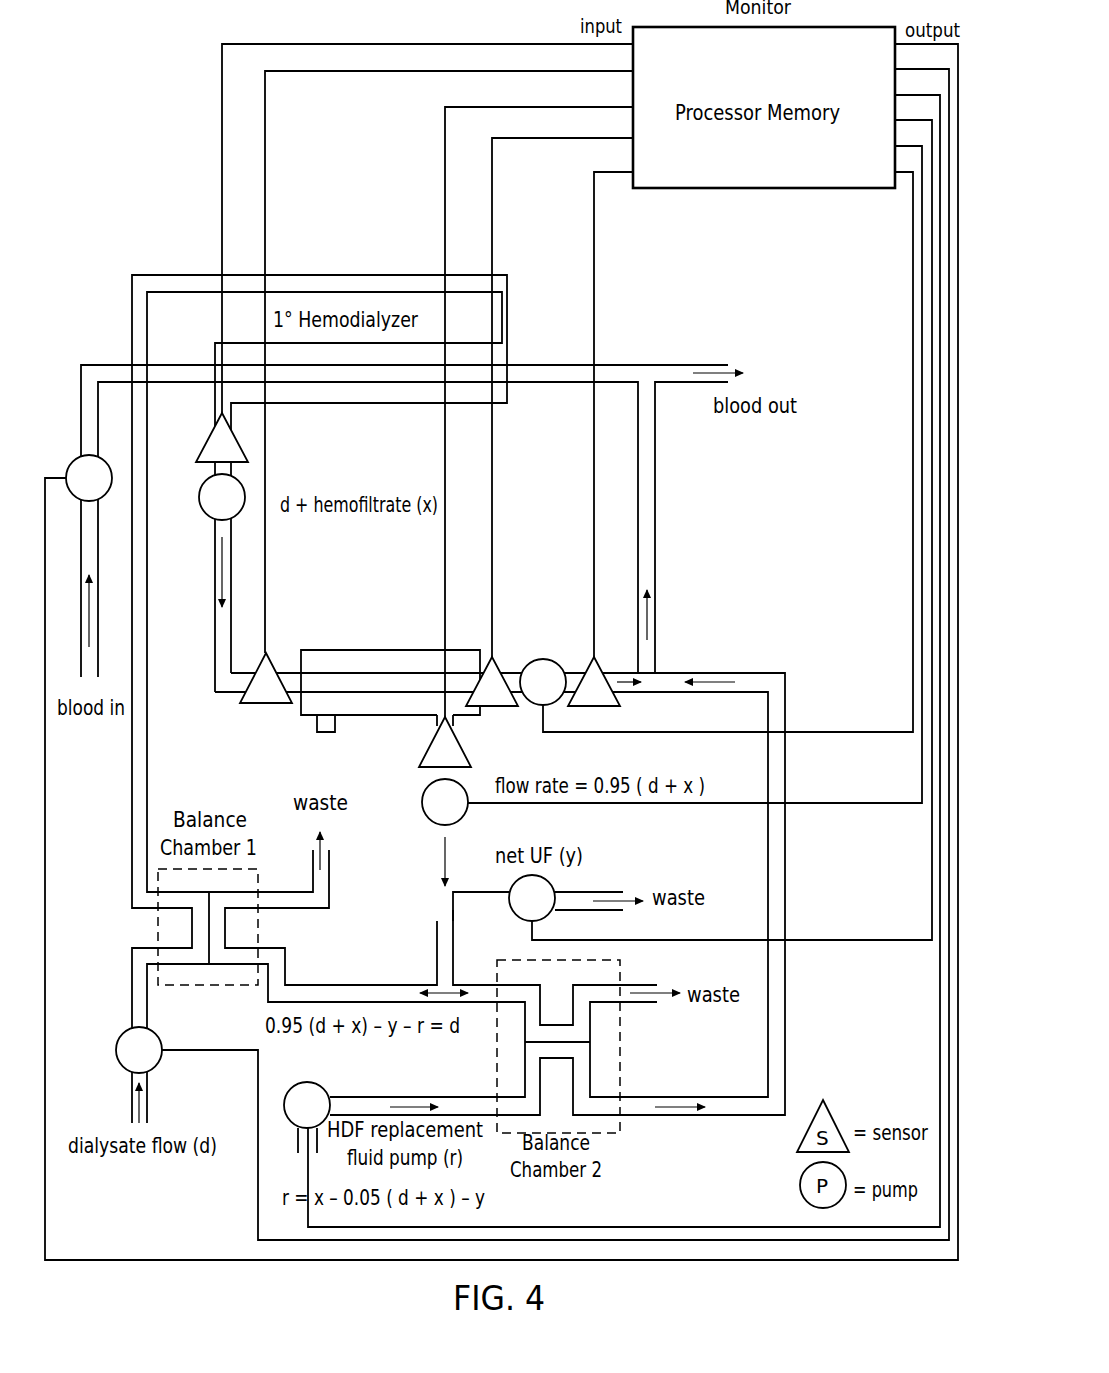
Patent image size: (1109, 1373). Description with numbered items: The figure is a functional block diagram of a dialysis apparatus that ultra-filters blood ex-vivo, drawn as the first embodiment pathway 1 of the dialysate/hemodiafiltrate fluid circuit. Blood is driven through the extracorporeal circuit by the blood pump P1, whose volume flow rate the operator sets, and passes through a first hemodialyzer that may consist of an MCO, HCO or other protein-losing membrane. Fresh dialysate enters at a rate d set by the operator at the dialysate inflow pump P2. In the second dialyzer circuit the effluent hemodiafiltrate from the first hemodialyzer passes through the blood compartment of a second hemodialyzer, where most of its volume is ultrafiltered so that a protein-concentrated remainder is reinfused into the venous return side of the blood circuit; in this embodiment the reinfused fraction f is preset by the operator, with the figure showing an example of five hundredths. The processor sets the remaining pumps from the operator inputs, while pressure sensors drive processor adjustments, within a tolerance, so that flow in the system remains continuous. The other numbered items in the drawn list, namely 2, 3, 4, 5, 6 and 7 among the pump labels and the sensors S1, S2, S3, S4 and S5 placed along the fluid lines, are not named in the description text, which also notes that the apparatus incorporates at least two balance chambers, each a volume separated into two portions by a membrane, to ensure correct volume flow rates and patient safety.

The first embodiment pathway 1 is at (468, 213).
The secondary hemodialyzer 2 is at (390, 675).
The pump P3 3 is at (222, 497).
The pump P4 4 is at (543, 682).
The pump P5 5 is at (445, 802).
The pump P6 6 is at (532, 898).
The pump P7 7 is at (307, 1105).
The blood pump P1 is at (89, 478).
The dialysate inflow pump P2 is at (139, 1050).
The sensor S1 is at (222, 439).
The sensor S2 is at (266, 679).
The sensor S3 is at (492, 683).
The sensor S4 is at (594, 683).
The sensor S5 is at (445, 743).